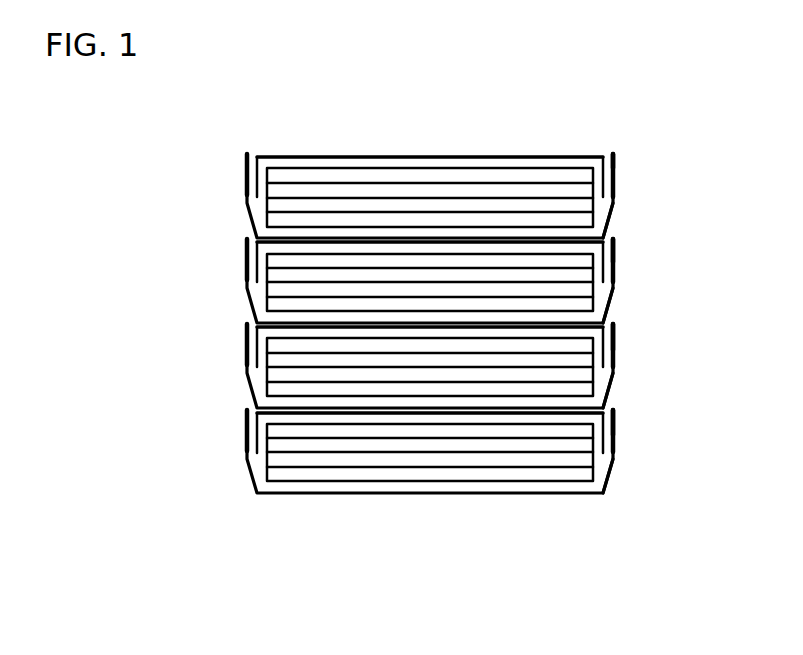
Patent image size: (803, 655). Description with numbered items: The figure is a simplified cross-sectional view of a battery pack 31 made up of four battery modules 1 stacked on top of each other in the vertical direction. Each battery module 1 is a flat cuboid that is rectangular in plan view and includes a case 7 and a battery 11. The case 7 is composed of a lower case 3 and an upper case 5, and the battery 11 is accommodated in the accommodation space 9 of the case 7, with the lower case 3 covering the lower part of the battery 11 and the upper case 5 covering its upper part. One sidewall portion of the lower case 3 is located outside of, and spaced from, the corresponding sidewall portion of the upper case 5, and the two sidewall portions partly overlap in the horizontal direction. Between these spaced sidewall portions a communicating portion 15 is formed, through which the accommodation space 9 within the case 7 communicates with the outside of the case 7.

The battery pack 31 is at (594, 113).
The battery module 1 is at (241, 243).
The accommodation space 9 is at (377, 163).
The battery 11 is at (336, 255).
The upper case 5 is at (247, 173).
The lower case 3 is at (615, 177).
The communicating portion 15 is at (615, 165).
The case 7 is at (616, 202).